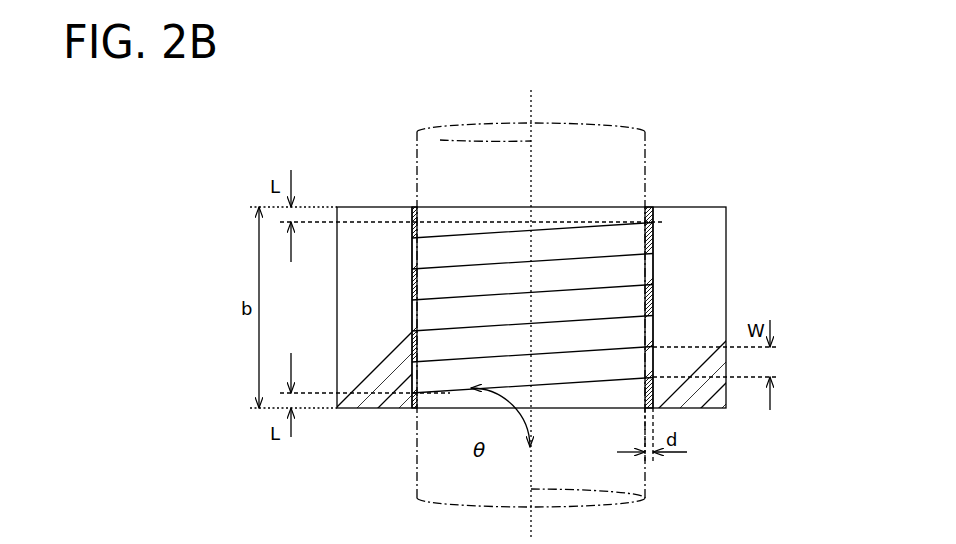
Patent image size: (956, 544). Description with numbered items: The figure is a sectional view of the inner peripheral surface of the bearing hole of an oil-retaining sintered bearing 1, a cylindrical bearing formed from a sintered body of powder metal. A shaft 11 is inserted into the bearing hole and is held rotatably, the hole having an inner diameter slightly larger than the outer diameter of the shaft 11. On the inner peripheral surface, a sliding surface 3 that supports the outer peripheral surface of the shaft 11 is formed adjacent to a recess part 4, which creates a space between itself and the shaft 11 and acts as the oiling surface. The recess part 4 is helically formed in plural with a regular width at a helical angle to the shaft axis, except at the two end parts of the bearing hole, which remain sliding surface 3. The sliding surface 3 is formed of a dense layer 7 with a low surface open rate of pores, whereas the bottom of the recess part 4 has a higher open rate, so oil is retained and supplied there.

The oil-retaining sintered bearing 1 is at (738, 217).
The sliding surface 3 is at (478, 278).
The recess part 4 is at (597, 238).
The dense layer 7 is at (652, 211).
The shaft 11 is at (417, 459).